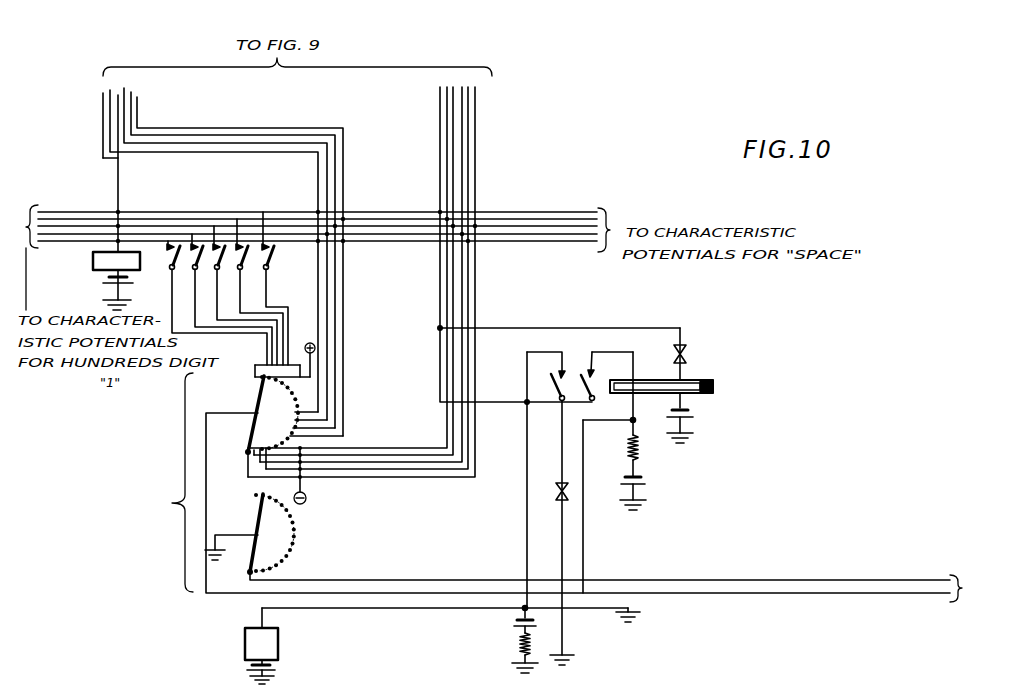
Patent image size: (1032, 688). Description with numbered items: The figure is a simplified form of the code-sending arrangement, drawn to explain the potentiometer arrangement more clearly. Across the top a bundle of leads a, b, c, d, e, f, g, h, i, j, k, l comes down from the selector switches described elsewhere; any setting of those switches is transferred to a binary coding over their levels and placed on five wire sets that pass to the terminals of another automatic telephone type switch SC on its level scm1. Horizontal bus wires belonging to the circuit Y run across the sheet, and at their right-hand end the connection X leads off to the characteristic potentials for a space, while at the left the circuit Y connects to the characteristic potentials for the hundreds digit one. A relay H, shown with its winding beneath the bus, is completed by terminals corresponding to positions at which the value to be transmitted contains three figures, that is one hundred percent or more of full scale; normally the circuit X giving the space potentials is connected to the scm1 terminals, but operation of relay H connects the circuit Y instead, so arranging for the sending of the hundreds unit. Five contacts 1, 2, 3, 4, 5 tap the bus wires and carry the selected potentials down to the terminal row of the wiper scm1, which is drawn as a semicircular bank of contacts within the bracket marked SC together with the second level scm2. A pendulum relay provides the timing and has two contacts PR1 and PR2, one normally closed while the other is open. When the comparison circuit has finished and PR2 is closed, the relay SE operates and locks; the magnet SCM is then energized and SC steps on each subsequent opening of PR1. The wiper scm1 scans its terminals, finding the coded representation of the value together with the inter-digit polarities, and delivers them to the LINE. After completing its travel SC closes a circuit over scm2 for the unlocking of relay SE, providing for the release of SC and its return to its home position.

The circuit Y is at (303, 226).
The circuit X is at (617, 231).
The relay H is at (88, 258).
The lead a to Fig. 9 a is at (108, 96).
The lead b to FIG. 9 b is at (115, 111).
The lead c to FIG. 9 c is at (123, 127).
The lead d to FIG. 9 d is at (124, 94).
The lead e to FIG. 9 e is at (131, 108).
The lead f to FIG. 9 f is at (137, 119).
The lead g to FIG. 9 g is at (445, 97).
The lead h to FIG. 9 h is at (452, 113).
The lead i to FIG. 9 i is at (458, 126).
The lead j to FIG. 9 j is at (462, 96).
The lead k to FIG. 9 k is at (468, 111).
The lead l to FIG. 9 l is at (470, 125).
The switch contact 1 is at (361, 448).
The switch contact 2 is at (407, 317).
The switch contact 3 is at (241, 295).
The switch contact 4 is at (255, 292).
The switch contact 5 is at (271, 288).
The automatic telephone type switch SC is at (545, 468).
The level scm1 is at (262, 412).
The level scm2 is at (270, 522).
The magnet SCM is at (278, 644).
The pendulum relay contact pr1 PR1 is at (548, 493).
The pendulum relay contact pr2 PR2 is at (696, 354).
The relay SE is at (744, 388).
The line LINE is at (975, 592).